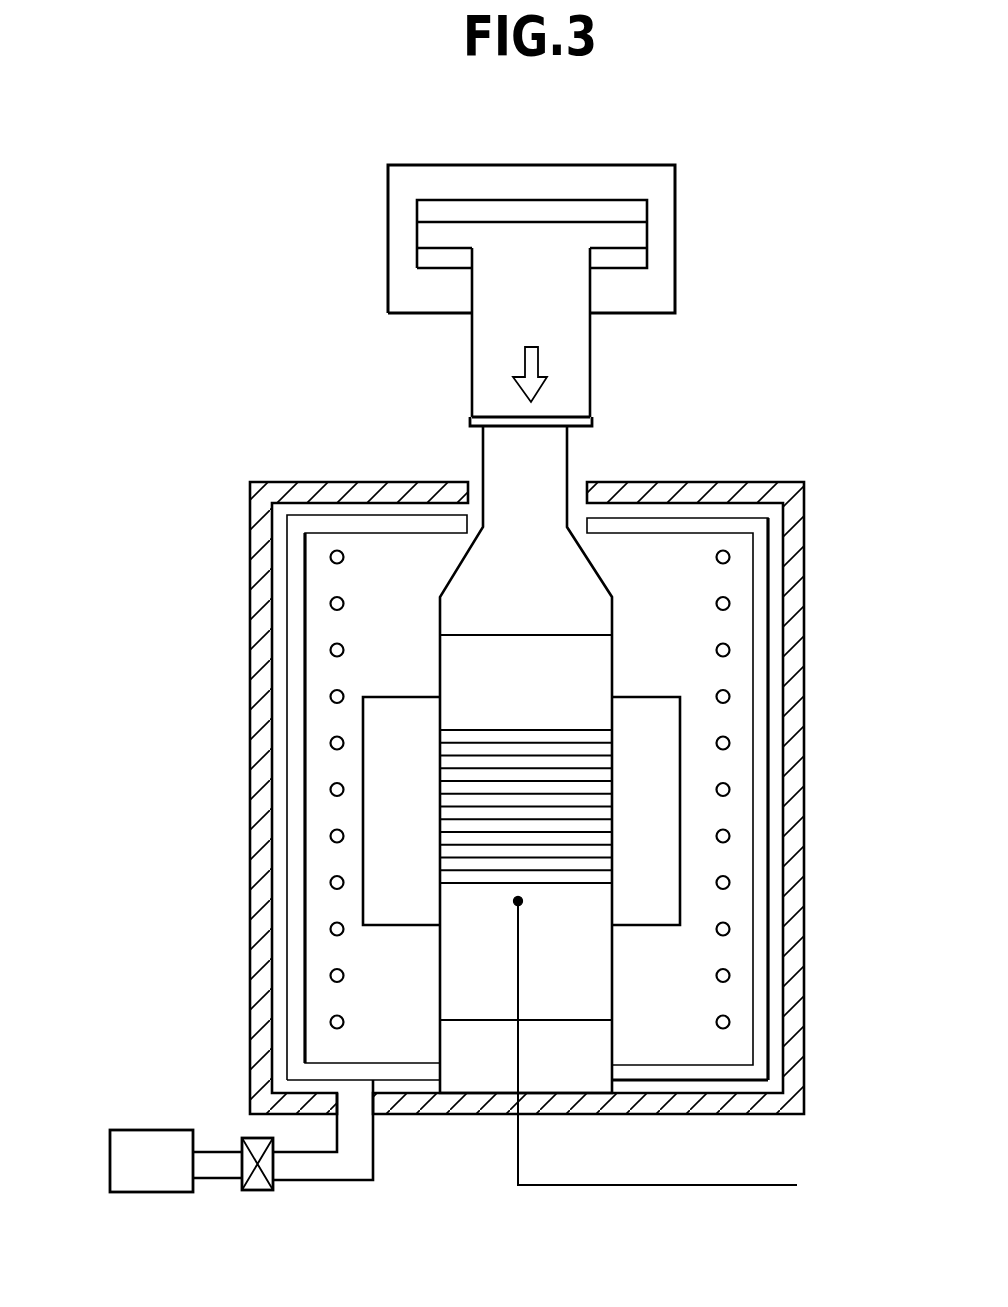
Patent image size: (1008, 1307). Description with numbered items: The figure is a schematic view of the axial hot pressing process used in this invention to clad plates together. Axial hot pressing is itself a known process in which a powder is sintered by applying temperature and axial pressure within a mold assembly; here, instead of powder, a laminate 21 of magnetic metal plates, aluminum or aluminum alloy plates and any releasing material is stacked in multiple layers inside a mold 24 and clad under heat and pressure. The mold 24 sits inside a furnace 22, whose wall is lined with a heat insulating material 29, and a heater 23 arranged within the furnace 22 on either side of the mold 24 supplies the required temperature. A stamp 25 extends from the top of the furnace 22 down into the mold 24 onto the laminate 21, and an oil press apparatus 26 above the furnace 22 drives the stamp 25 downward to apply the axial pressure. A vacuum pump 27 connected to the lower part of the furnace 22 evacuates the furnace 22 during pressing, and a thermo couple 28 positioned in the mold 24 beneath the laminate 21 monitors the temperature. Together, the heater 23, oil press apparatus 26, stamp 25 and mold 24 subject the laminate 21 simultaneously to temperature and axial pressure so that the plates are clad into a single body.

The laminate 21 is at (565, 800).
The furnace 22 is at (802, 1042).
The heater 23 is at (730, 835).
The mold 24 is at (643, 720).
The stamp 25 is at (583, 662).
The oil press apparatus 26 is at (675, 257).
The vacuum pump 27 is at (110, 1155).
The thermo couple 28 is at (797, 1185).
The heat insulating material 29 is at (753, 960).